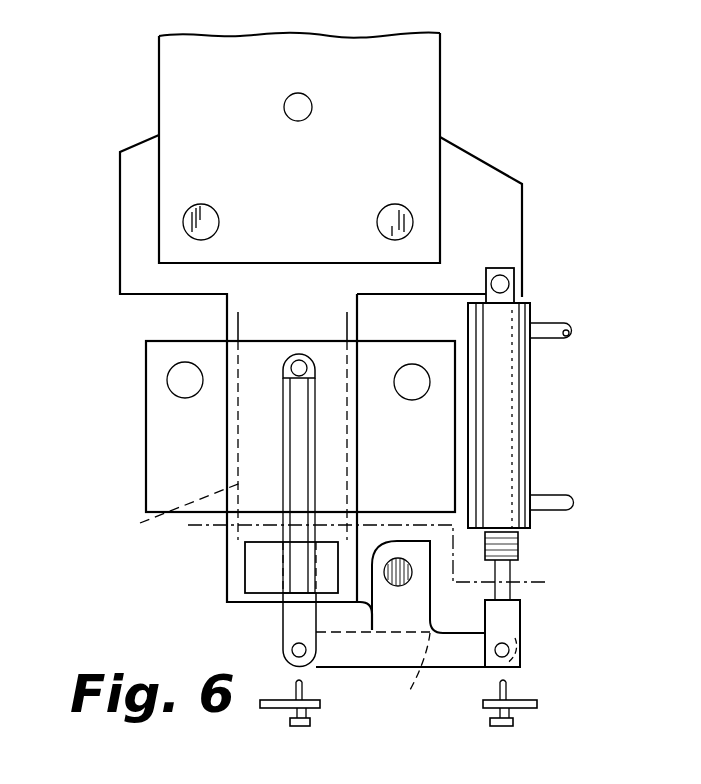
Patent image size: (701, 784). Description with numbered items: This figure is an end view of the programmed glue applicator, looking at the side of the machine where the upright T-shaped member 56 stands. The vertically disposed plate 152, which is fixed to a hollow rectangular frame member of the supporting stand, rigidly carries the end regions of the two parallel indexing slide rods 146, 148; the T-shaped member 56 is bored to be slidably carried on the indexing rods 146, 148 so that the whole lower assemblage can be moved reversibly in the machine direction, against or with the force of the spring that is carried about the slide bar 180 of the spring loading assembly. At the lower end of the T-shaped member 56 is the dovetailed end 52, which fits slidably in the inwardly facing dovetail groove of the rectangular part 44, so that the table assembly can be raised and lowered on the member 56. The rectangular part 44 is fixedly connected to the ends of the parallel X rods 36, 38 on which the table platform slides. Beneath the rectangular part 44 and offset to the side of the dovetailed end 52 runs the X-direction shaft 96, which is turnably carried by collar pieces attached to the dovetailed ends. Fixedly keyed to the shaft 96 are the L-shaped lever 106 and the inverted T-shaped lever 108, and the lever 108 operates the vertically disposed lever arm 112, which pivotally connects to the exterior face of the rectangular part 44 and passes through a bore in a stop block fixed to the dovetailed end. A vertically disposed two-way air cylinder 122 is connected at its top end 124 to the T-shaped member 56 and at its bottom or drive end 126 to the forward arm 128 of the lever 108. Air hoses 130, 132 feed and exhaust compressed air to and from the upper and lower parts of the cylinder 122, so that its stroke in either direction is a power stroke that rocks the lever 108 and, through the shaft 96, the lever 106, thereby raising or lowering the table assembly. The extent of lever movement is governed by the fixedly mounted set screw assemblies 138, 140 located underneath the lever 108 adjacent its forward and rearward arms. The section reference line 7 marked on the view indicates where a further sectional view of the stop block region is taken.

The plate 152 is at (418, 90).
The slide bar 180 is at (297, 105).
The indexing slide rod 146 is at (202, 213).
The indexing slide rod 148 is at (393, 210).
The T-shaped member 56 is at (507, 212).
The rectangular part 44 is at (158, 407).
The X rod 36 is at (192, 393).
The X rod 38 is at (412, 395).
The dovetailed end 52 is at (160, 517).
The lever arm 112 is at (305, 468).
The two-way air cylinder 122 is at (518, 425).
The top end 124 is at (512, 302).
The air hose 132 is at (570, 330).
The air hose 130 is at (556, 497).
The bottom end 126 is at (507, 573).
The forward arm 128 is at (475, 657).
The inverted T-shaped lever 108 is at (385, 653).
The L-shaped lever 106 is at (437, 681).
The shaft 96 is at (410, 580).
The set screw assembly 138 is at (297, 722).
The set screw assembly 140 is at (507, 728).
The section line 7- 7 is at (198, 517).